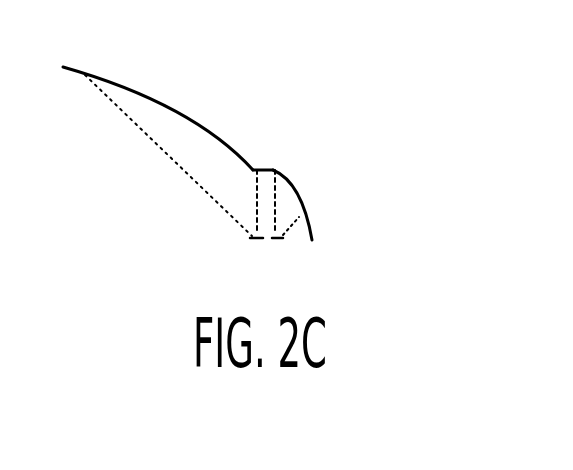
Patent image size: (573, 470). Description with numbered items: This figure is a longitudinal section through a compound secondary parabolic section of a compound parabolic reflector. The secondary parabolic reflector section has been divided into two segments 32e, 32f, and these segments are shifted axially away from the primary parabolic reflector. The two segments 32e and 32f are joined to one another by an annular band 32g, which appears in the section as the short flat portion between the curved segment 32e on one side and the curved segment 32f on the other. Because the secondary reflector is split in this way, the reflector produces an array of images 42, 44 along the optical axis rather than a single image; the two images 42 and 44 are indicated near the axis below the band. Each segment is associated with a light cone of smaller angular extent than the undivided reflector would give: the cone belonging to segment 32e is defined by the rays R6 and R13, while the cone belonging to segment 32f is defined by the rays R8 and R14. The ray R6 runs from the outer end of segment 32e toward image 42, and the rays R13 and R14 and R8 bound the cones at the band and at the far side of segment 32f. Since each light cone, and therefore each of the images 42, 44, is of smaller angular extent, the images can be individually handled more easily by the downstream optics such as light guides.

The segment 32e is at (155, 99).
The annular band 32g is at (268, 170).
The segment 32f is at (296, 190).
The ray R6 is at (192, 182).
The ray R13 is at (252, 201).
The ray R14 is at (278, 180).
The ray R8 is at (290, 230).
The image 42 is at (252, 240).
The image 44 is at (278, 240).